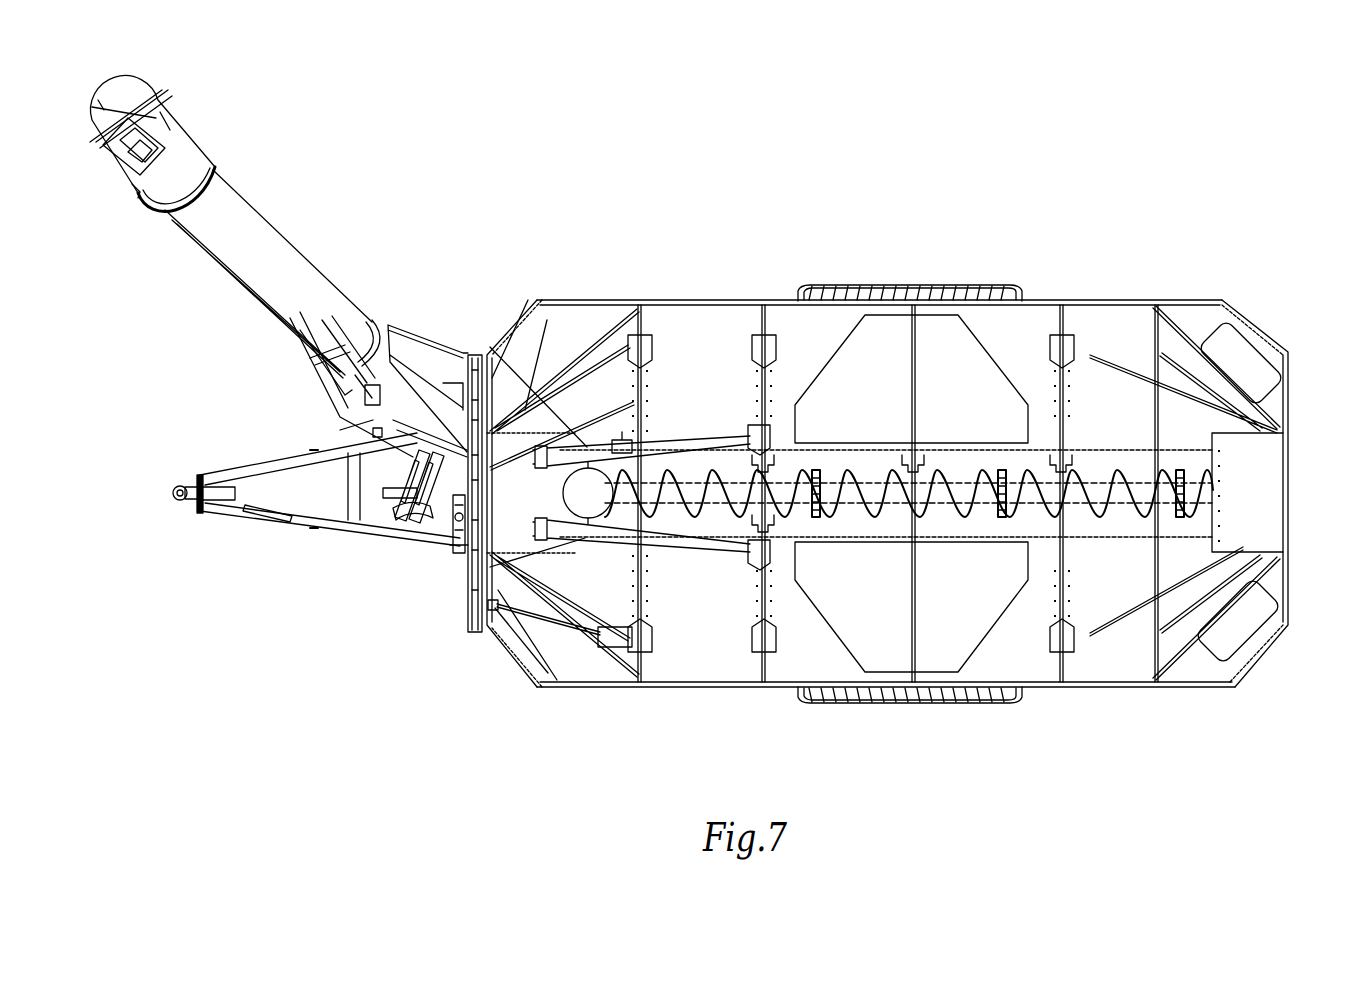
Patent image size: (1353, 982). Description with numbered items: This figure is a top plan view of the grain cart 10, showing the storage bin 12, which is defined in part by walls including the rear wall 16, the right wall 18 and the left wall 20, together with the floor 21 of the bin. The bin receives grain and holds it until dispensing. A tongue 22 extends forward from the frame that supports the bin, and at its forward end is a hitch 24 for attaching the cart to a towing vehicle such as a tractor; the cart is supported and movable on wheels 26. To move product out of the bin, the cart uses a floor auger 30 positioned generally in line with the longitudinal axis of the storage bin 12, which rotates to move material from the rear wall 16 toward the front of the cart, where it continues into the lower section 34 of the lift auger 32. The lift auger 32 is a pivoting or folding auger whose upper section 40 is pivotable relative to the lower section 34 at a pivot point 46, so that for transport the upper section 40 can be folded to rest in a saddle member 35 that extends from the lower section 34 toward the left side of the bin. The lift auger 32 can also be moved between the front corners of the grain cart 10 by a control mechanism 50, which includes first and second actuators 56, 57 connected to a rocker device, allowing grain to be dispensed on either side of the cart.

The grain cart 10 is at (1043, 172).
The storage bin 12 is at (590, 300).
The rear wall 16 is at (1290, 493).
The right wall 18 is at (748, 300).
The left wall 20 is at (731, 687).
The floor 21 is at (1025, 354).
The tongue 22 is at (285, 462).
The hitch 24 is at (175, 487).
The wheels 26 is at (835, 285).
The floor auger 30 is at (942, 490).
The lift auger 32 is at (251, 198).
The lower section 34 is at (420, 384).
The saddle member 35 is at (393, 520).
The upper section 40 is at (287, 261).
The pivot point 46 is at (341, 393).
The control mechanism 50 is at (428, 528).
The first actuator 56 is at (162, 122).
The second actuator 57 is at (460, 558).